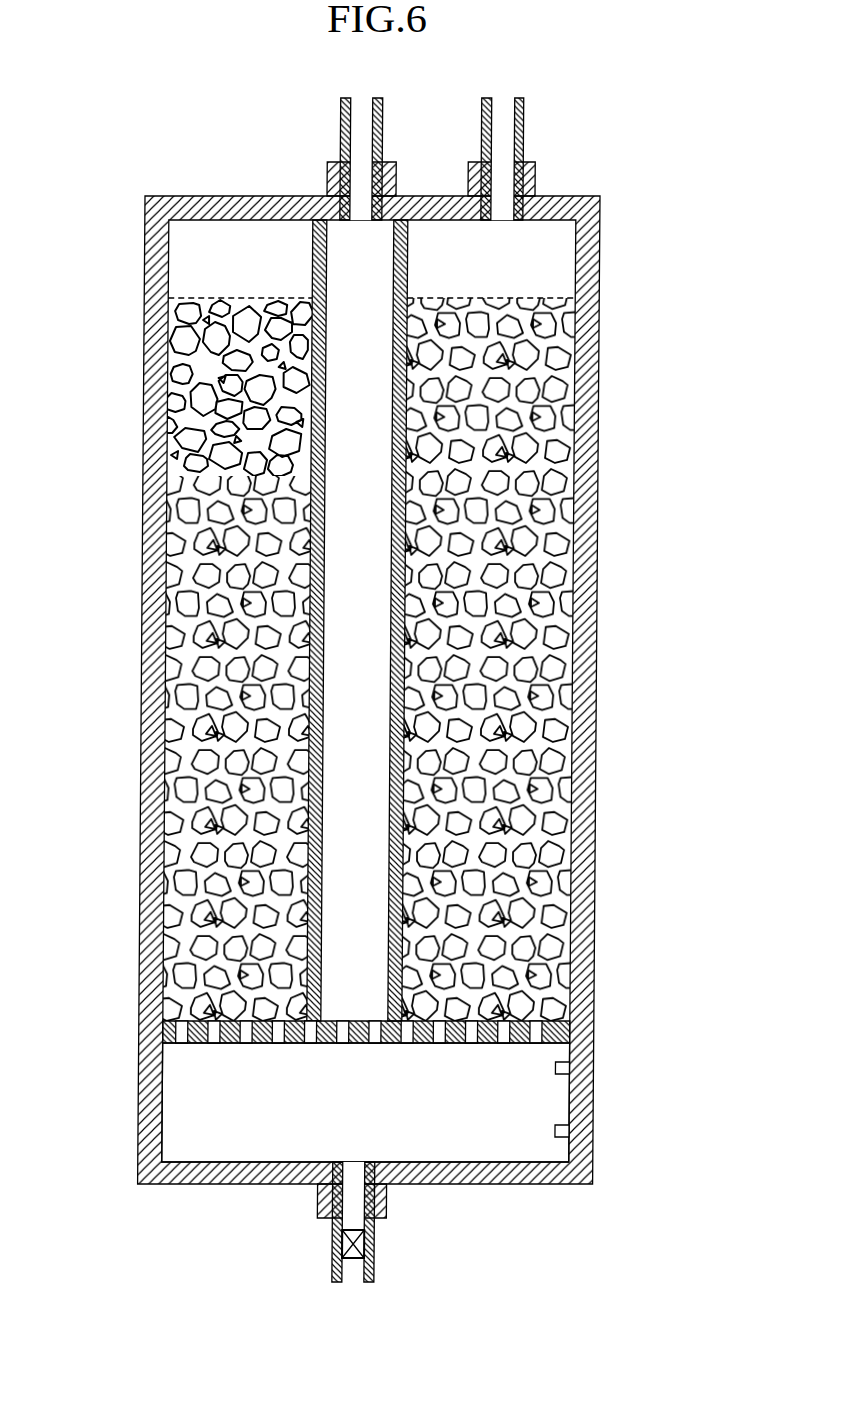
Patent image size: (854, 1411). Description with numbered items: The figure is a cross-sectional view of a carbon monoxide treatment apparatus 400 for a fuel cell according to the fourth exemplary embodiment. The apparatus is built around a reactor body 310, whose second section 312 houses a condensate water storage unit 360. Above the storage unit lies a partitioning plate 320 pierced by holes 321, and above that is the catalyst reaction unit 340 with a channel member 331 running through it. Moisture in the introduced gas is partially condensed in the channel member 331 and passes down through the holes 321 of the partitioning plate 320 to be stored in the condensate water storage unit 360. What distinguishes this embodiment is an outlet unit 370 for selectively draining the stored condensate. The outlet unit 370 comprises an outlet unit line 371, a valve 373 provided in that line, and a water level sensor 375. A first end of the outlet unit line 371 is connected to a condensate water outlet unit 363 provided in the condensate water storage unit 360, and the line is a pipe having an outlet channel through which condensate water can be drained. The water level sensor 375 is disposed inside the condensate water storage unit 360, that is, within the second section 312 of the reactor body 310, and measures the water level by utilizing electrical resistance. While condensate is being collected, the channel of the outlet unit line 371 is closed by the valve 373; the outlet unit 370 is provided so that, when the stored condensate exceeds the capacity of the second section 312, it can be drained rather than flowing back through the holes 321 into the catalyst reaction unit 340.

The carbon monoxide treatment apparatus 400 is at (381, 75).
The reactor body 310 is at (624, 620).
The second section 312 is at (551, 1060).
The partitioning plate 320 is at (371, 1065).
The holes 321 is at (487, 1042).
The channel member 331 is at (313, 704).
The catalyst reaction unit 340 is at (570, 463).
The condensate water storage unit 360 is at (182, 1122).
The condensate water outlet unit 363 is at (394, 1200).
The outlet unit 370 is at (369, 1226).
The outlet unit line 371 is at (340, 1265).
The valve 373 is at (349, 1246).
The water level sensor 375 is at (577, 1128).